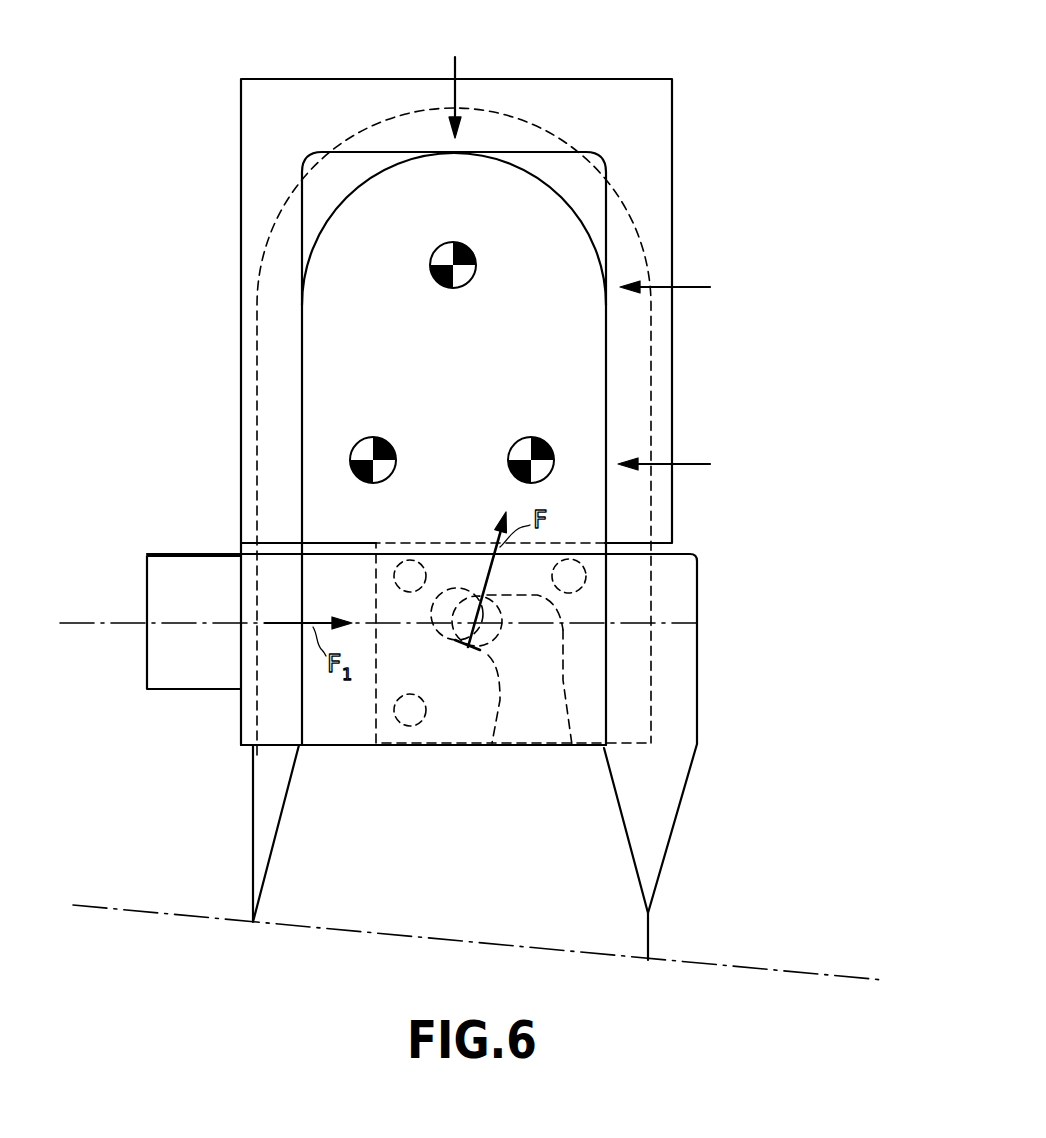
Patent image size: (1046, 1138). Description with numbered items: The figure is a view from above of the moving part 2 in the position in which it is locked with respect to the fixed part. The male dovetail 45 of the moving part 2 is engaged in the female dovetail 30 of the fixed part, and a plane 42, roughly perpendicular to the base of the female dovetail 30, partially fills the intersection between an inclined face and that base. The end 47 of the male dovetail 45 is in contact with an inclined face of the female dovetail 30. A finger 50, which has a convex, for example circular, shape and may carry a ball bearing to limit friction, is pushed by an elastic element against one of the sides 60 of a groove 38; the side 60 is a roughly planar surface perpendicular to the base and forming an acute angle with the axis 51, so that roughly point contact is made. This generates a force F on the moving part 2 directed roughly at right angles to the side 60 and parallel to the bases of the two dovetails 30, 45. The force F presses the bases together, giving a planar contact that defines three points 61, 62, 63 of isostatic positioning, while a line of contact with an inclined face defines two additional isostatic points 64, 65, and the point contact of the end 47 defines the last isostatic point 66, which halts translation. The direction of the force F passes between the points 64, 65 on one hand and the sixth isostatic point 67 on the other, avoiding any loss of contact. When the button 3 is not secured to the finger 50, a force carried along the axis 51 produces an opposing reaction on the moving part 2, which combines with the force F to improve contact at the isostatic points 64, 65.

The moving part 2 is at (358, 745).
The button 3 is at (183, 690).
The female dovetail 30 is at (672, 137).
The groove 38 is at (560, 680).
The plane 42 is at (370, 151).
The male dovetail 45 is at (347, 197).
The end of the male dovetail 47 is at (460, 153).
The finger 50 is at (500, 632).
The axis 51 is at (82, 622).
The side of the groove 60 is at (495, 653).
The point of isostatic positioning 61 is at (360, 441).
The point of isostatic positioning 62 is at (516, 441).
The point of isostatic positioning 63 is at (430, 252).
The isostatic point 64 is at (697, 463).
The isostatic point 65 is at (693, 289).
The isostatic point 66 is at (460, 68).
The sixth isostatic point 67 is at (512, 600).